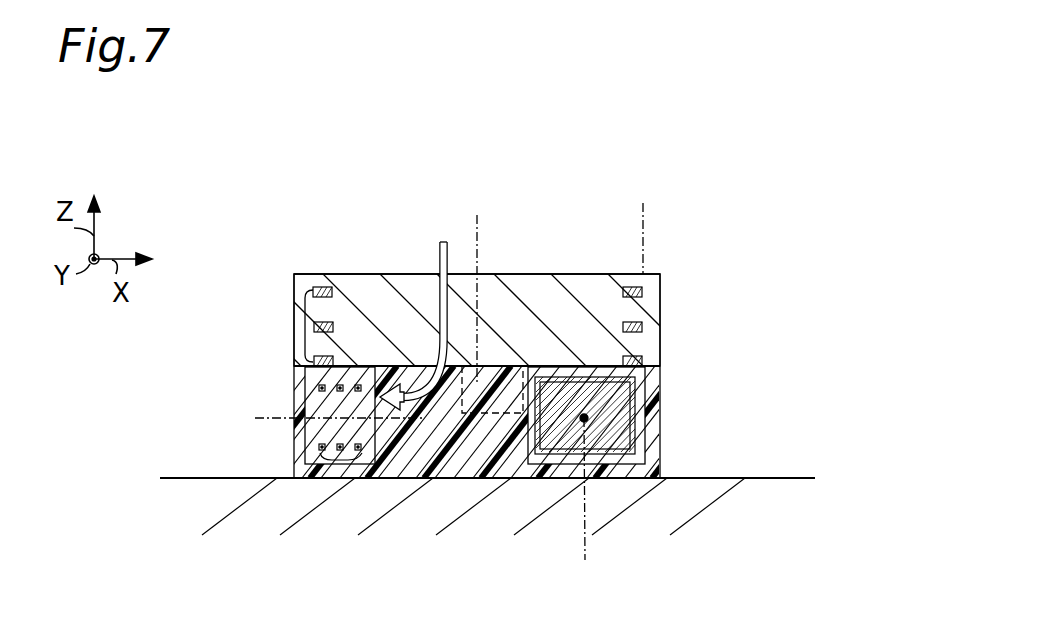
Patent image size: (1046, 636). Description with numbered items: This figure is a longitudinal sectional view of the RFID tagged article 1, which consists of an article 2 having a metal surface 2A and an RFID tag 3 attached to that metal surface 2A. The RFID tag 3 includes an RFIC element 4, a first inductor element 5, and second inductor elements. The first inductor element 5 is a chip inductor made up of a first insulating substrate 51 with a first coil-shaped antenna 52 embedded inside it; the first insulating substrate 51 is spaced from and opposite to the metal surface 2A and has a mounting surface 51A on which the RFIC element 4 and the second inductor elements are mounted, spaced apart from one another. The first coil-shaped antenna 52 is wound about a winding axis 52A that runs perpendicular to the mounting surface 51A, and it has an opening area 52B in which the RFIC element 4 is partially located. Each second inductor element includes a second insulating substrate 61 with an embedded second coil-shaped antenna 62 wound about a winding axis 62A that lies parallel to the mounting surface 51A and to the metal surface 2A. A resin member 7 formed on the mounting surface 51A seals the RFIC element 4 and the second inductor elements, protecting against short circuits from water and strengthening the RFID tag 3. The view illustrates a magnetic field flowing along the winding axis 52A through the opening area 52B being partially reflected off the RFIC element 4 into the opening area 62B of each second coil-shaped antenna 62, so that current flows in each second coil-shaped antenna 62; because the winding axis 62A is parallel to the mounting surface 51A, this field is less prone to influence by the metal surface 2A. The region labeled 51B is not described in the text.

The RFID tagged article 1 is at (233, 160).
The article 2 is at (765, 506).
The metal surface 2A is at (803, 478).
The RFID tag 3 is at (698, 272).
The RFIC element 4 is at (528, 276).
The first inductor element 5 is at (582, 276).
The resin member 7 is at (430, 478).
The first insulating substrate 51 is at (354, 293).
The mounting surface 51A is at (655, 375).
The flow path 51B is at (416, 292).
The first coil-shaped antenna 52 is at (305, 327).
The winding axis 52A is at (477, 248).
The opening area 52B is at (650, 212).
The second insulating substrate 61 is at (305, 372).
The second coil-shaped antenna 62 is at (645, 402).
The winding axis 62A is at (278, 420).
The opening area 62B is at (310, 400).